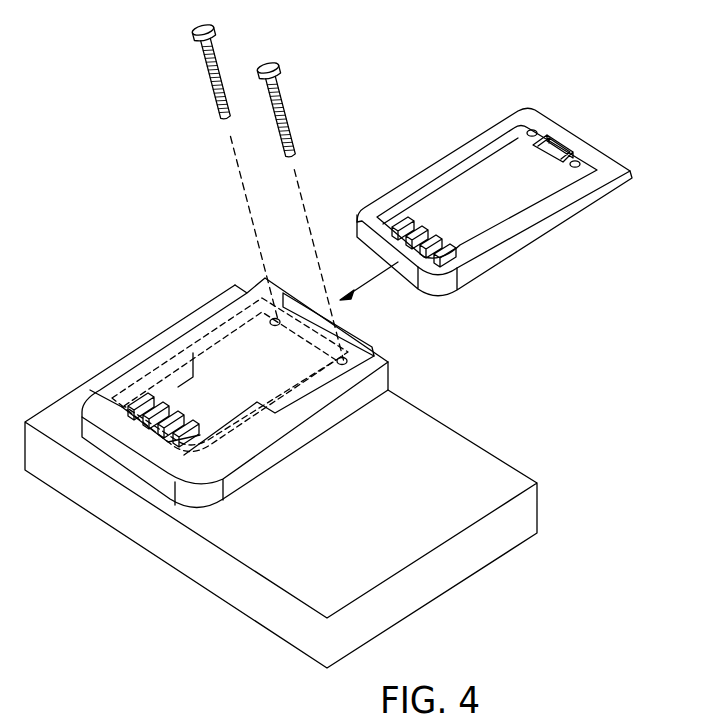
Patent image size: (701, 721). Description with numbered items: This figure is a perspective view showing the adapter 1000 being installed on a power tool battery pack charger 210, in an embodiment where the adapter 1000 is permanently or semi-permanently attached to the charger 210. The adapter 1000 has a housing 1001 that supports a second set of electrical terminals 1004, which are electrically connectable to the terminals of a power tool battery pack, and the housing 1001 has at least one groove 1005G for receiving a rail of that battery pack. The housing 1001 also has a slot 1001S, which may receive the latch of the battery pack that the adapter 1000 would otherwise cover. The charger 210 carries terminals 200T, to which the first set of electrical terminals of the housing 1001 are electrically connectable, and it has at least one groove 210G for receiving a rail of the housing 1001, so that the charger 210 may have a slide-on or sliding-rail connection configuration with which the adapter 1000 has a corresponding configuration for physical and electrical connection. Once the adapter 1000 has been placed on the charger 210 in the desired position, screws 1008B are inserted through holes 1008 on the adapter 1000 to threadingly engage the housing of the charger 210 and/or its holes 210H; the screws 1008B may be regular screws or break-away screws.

The charger 210 is at (452, 450).
The groove 210G is at (193, 363).
The holes 210H is at (348, 357).
The terminals 200T is at (163, 437).
The screws 1008B is at (282, 74).
The adapter 1000 is at (494, 184).
The housing 1001 is at (573, 202).
The groove 1005G is at (462, 167).
The second set of electrical terminals 1004 is at (397, 217).
The holes 1008 is at (532, 128).
The slot 1001S is at (560, 150).